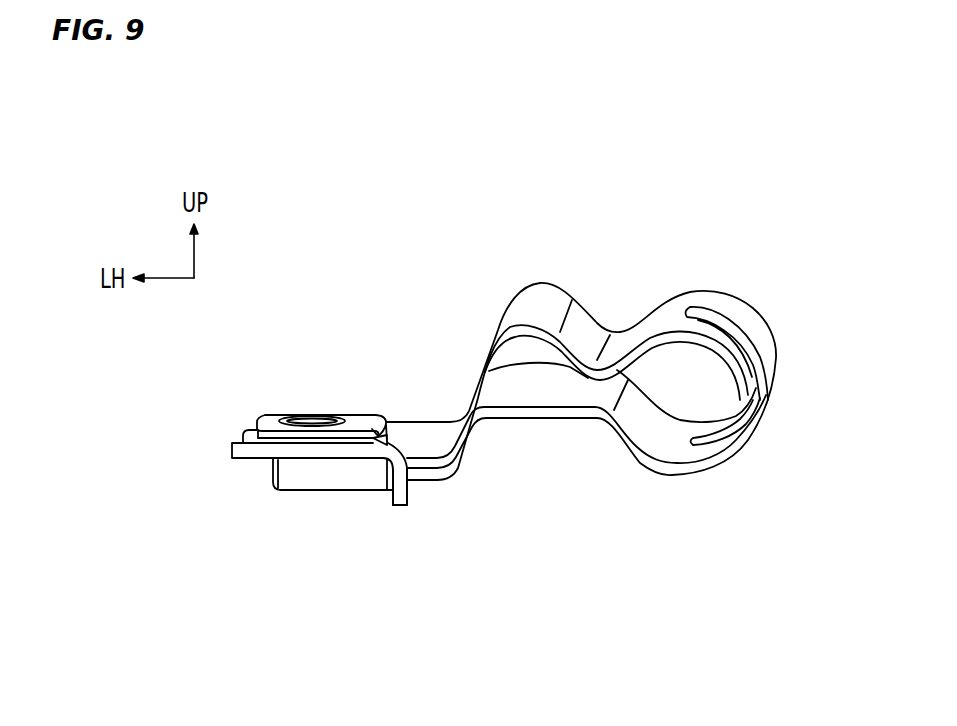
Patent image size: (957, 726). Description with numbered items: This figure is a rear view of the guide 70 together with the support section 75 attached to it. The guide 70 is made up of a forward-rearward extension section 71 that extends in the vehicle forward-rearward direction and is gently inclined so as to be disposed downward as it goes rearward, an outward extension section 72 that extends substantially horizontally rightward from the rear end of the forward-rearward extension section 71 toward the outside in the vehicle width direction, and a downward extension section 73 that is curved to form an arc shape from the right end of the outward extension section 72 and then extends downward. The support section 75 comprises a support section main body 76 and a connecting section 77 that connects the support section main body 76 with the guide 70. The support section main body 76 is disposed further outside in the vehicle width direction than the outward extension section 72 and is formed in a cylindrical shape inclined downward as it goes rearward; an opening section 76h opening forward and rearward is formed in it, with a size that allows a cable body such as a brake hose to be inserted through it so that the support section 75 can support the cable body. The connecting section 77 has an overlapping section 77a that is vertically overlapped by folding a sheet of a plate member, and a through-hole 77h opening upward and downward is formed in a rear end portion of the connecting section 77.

The guide 70 is at (317, 446).
The forward-rearward extension section 71 is at (297, 372).
The outward extension section 72 is at (328, 452).
The downward extension section 73 is at (410, 497).
The support section 75 is at (592, 374).
The support section main body 76 is at (737, 312).
The opening section 76h is at (696, 388).
The connecting section 77 is at (432, 432).
The overlapping section 77a is at (408, 432).
The through-hole 77h is at (303, 418).